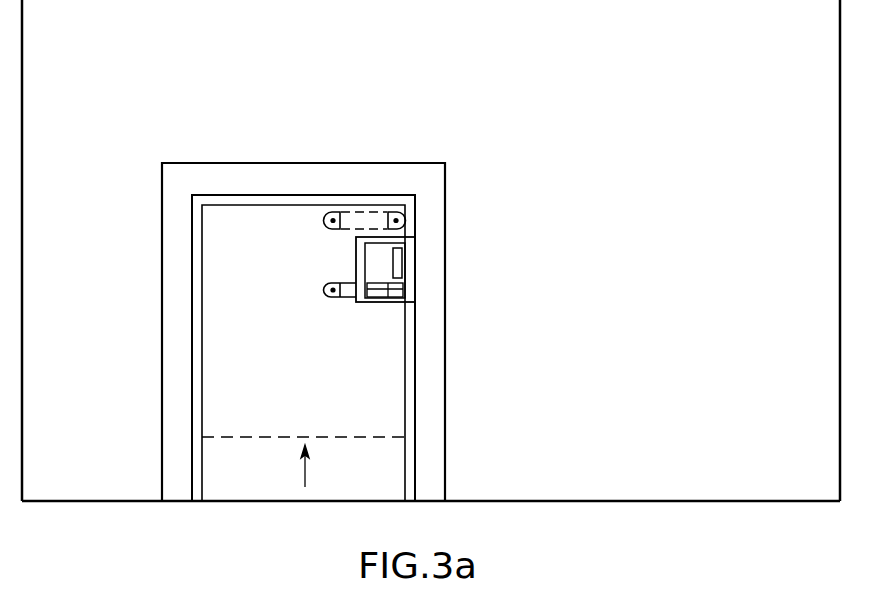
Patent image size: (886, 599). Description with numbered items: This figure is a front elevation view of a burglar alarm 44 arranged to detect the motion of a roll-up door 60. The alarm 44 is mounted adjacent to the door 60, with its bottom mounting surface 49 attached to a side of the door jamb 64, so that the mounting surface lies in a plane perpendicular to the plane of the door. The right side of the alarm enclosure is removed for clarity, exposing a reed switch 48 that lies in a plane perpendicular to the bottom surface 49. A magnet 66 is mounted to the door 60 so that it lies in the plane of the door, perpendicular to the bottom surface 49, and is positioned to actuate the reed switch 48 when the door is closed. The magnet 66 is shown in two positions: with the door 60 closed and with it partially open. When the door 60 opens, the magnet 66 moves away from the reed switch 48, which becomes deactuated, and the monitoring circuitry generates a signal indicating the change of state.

The burglar alarm 44 is at (376, 304).
The reed switch 48 is at (383, 283).
The bottom surface 49 is at (416, 266).
The roll-up door 60 is at (280, 393).
The door jamb 64 is at (435, 397).
The magnet 66 is at (323, 290).